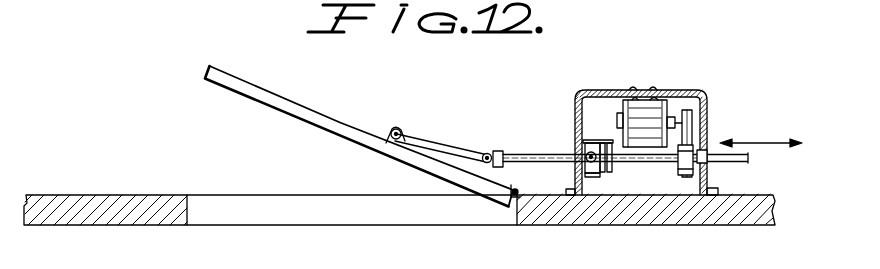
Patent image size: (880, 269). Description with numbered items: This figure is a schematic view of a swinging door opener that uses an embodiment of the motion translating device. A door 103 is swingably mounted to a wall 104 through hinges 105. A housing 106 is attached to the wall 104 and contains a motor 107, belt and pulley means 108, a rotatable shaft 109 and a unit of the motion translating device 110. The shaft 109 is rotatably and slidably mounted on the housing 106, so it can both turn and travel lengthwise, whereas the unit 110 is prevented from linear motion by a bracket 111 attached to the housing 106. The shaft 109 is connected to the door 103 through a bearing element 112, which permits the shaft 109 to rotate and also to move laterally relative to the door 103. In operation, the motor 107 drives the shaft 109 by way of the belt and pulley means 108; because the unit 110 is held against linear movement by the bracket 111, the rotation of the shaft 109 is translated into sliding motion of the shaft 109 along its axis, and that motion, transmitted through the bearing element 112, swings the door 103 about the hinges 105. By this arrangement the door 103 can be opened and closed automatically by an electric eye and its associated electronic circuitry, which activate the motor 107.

The door 103 is at (325, 115).
The wall 104 is at (622, 223).
The hinges 105 is at (516, 188).
The housing 106 is at (704, 108).
The motor 107 is at (647, 104).
The belt and pulley means 108 is at (698, 138).
The rotatable shaft 109 is at (736, 163).
The unit of the motion translating device 110 is at (585, 147).
The bracket 111 is at (590, 118).
The bearing element 112 is at (498, 151).